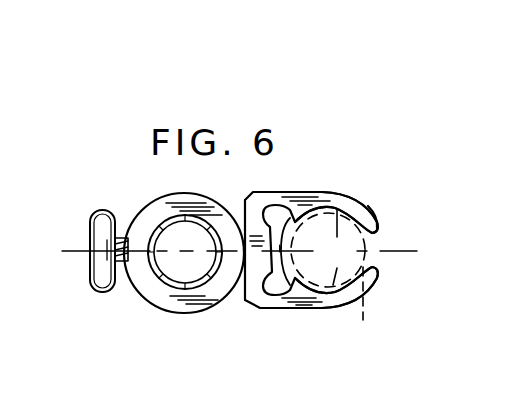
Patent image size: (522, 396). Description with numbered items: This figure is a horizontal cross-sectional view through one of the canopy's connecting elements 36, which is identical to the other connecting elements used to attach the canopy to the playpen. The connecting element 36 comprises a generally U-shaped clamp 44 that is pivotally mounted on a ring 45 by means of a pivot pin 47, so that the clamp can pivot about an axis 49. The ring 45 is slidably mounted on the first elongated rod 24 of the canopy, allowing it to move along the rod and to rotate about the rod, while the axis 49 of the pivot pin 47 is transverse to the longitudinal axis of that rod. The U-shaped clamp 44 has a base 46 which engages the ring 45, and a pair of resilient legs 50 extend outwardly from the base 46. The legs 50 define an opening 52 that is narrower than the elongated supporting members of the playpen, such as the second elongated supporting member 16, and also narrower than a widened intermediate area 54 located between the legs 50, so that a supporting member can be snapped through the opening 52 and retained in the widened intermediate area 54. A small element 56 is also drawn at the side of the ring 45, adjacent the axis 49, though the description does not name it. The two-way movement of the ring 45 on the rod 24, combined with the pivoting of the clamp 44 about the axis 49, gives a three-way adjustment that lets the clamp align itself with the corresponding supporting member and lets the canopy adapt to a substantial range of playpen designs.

The second elongated supporting member 16 is at (365, 309).
The first elongated rod 24 is at (168, 285).
The connecting element 36 is at (225, 306).
The U-shaped clamp 44 is at (340, 322).
The ring 45 is at (140, 283).
The base 46 is at (245, 207).
The pivot pin 47 is at (282, 280).
The axis 49 is at (80, 253).
The resilient legs 50 is at (332, 203).
The opening 52 is at (380, 232).
The widened intermediate area 54 is at (328, 250).
The connector 56 is at (125, 238).